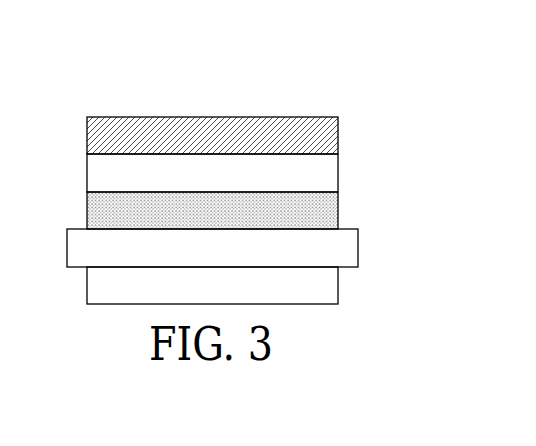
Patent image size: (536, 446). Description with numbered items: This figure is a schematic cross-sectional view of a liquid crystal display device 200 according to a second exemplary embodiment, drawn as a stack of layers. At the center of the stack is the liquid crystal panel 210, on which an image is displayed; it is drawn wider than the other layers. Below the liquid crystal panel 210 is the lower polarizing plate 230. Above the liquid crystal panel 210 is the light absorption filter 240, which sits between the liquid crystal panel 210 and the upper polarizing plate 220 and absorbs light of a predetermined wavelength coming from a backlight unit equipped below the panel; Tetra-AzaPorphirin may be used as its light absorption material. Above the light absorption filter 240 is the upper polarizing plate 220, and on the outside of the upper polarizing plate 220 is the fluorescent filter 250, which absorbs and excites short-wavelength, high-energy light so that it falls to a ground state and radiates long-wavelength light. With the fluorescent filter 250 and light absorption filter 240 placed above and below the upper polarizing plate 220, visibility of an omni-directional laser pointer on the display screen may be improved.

The liquid crystal display device 200 is at (349, 107).
The liquid crystal panel 210 is at (353, 247).
The upper polarizing plate 220 is at (333, 173).
The lower polarizing plate 230 is at (333, 287).
The light absorption filter 240 is at (333, 210).
The fluorescent filter 250 is at (333, 136).